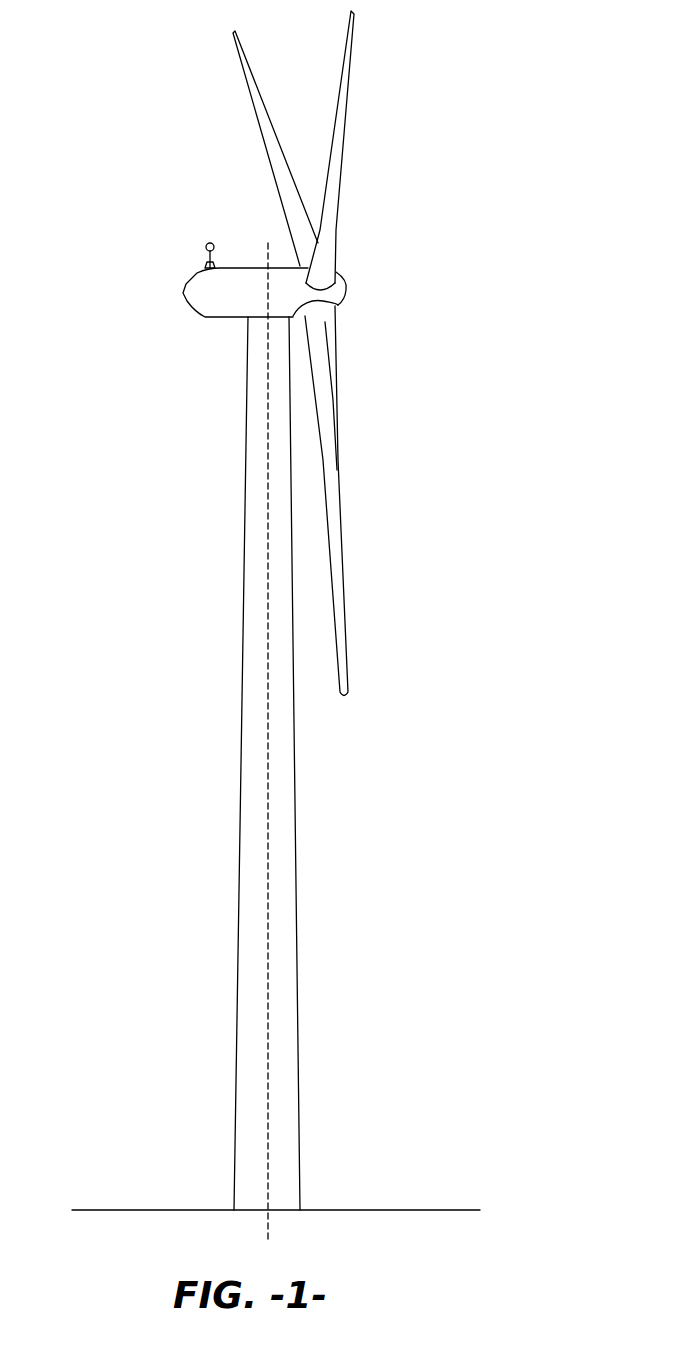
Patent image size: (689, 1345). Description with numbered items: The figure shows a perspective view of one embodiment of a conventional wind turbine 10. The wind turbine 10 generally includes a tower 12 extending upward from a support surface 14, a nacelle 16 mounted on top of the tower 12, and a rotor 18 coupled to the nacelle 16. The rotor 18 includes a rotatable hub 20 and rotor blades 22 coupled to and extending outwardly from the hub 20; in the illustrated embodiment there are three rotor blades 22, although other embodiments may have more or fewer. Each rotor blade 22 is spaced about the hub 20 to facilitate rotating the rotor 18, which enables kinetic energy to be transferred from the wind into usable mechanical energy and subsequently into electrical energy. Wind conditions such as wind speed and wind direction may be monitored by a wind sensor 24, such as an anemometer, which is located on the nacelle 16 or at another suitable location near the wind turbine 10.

The wind turbine 10 is at (450, 98).
The tower 12 is at (238, 1000).
The support surface 14 is at (155, 1210).
The nacelle 16 is at (218, 318).
The rotor 18 is at (347, 310).
The rotatable hub 20 is at (346, 300).
The rotor blade 22 is at (333, 135).
The wind sensor 24 is at (198, 244).